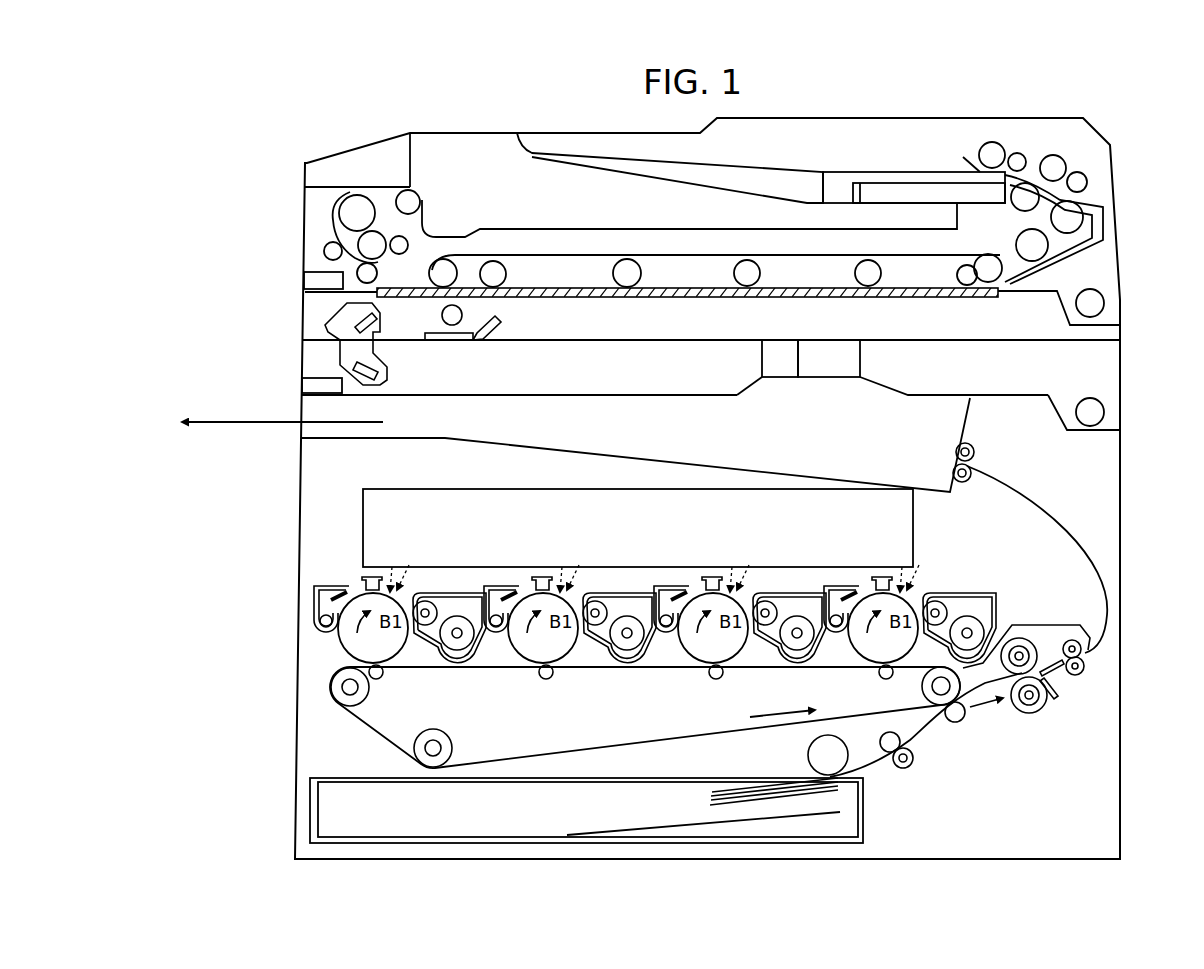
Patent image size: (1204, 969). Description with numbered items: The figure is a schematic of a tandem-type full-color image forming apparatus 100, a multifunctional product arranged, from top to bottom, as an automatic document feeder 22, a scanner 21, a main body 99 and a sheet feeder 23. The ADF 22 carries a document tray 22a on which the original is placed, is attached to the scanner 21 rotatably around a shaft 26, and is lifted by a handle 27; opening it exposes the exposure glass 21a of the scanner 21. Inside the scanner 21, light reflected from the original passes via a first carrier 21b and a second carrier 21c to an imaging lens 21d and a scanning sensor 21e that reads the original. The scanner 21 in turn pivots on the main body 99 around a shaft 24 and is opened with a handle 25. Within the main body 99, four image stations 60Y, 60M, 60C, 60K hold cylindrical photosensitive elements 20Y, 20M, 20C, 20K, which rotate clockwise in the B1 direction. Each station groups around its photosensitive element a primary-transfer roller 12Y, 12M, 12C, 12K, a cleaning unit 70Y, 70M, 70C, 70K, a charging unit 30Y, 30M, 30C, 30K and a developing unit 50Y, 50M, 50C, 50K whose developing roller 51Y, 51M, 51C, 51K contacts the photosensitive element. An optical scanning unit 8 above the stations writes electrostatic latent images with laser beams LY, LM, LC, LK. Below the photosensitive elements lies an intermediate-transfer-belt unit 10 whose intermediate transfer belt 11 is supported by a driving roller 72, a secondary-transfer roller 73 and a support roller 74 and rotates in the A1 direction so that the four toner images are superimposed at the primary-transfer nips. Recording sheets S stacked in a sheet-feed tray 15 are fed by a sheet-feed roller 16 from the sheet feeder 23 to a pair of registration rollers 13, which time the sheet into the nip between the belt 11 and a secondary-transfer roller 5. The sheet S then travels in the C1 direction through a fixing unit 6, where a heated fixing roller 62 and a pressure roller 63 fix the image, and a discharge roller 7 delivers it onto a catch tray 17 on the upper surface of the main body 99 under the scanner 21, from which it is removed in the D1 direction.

The image forming apparatus 100 is at (1126, 124).
The automatic document feeder 22 is at (278, 212).
The document tray 22a is at (772, 166).
The handle 27 is at (303, 279).
The shaft 26 is at (1104, 305).
The scanner 21 is at (278, 364).
The exposure glass 21a is at (636, 297).
The first carrier 21b is at (532, 323).
The second carrier 21c is at (410, 375).
The imaging lens 21d is at (763, 358).
The scanning sensor 21e is at (858, 358).
The shaft 24 is at (1104, 413).
The handle 25 is at (300, 388).
The sheet take-away direction D1 is at (282, 437).
The optical scanning unit 8 is at (375, 472).
The catch tray 17 is at (798, 472).
The discharge roller 7 is at (982, 446).
The main body 99 is at (1098, 540).
The image station 60K is at (409, 629).
The image station 60C is at (581, 617).
The image station 60M is at (735, 622).
The image station 60Y is at (943, 615).
The photosensitive element 20K is at (390, 654).
The photosensitive element 20C is at (560, 654).
The photosensitive element 20M is at (732, 654).
The photosensitive element 20Y is at (900, 654).
The charging unit 30K is at (374, 573).
The charging unit 30C is at (544, 573).
The charging unit 30M is at (714, 573).
The charging unit 30Y is at (884, 573).
The cleaning unit 70K is at (333, 572).
The cleaning unit 70C is at (503, 572).
The cleaning unit 70M is at (678, 572).
The cleaning unit 70Y is at (848, 572).
The developing roller 51K is at (432, 600).
The developing roller 51C is at (602, 600).
The developing roller 51M is at (772, 600).
The developing roller 51Y is at (955, 600).
The developing unit 50K is at (470, 650).
The developing unit 50C is at (640, 650).
The developing unit 50M is at (810, 650).
The developing unit 50Y is at (988, 630).
The primary-transfer roller 12K is at (386, 676).
The primary-transfer roller 12C is at (549, 680).
The primary-transfer roller 12M is at (719, 680).
The primary-transfer roller 12Y is at (887, 680).
The laser beam LK is at (405, 555).
The laser beam LC is at (575, 555).
The laser beam LM is at (742, 555).
The laser beam LY is at (912, 555).
The rotation direction B1 is at (635, 622).
The intermediate-transfer-belt unit 10 is at (636, 723).
The intermediate transfer belt 11 is at (718, 741).
The driving roller 72 is at (370, 698).
The secondary-transfer roller 73 is at (922, 687).
The support roller 74 is at (413, 754).
The belt-rotation direction A1 is at (782, 702).
The secondary-transfer roller 5 is at (958, 731).
The sheet conveyance direction C1 is at (986, 715).
The registration rollers 13 is at (905, 786).
The sheet-feed roller 16 is at (810, 760).
The fixing unit 6 is at (1026, 700).
The fixing roller 62 is at (1032, 658).
The pressure roller 63 is at (1046, 709).
The sheet feeder 23 is at (536, 792).
The sheet-feed tray 15 is at (733, 789).
The recording sheet S is at (714, 797).